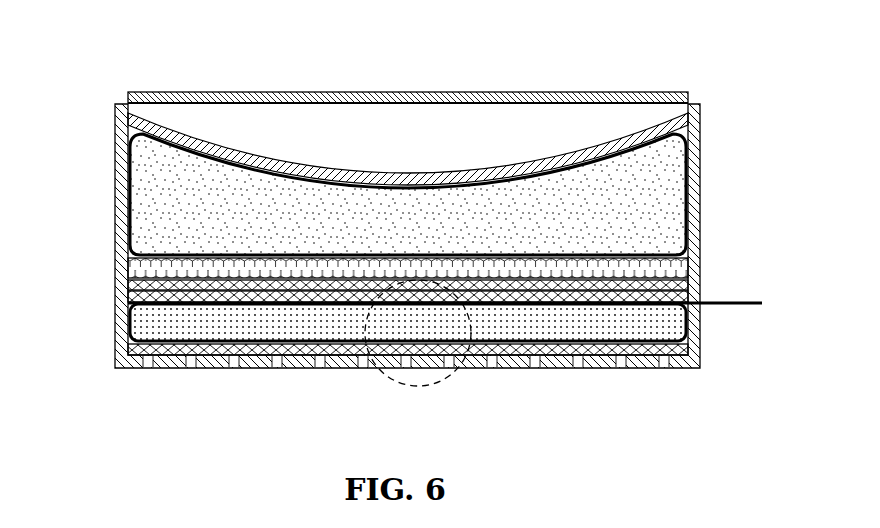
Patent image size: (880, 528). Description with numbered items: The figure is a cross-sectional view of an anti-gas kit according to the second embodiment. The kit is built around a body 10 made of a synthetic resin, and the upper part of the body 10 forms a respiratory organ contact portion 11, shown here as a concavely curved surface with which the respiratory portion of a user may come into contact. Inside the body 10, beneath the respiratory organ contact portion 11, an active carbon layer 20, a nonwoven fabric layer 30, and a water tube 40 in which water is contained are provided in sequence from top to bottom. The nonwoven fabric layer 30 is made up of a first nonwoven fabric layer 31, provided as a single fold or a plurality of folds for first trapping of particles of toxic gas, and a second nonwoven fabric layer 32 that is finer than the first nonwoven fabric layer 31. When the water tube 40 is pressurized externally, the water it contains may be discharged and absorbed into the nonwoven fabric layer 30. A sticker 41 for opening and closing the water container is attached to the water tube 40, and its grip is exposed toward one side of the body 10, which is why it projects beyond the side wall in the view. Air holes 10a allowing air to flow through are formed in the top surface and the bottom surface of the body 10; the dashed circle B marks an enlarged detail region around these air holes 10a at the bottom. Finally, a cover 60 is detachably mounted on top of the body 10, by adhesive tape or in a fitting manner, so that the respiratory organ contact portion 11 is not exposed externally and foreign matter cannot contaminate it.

The body 10 is at (708, 177).
The air holes 10a is at (408, 364).
The respiratory organ contact portion 11 is at (403, 142).
The active carbon layer 20 is at (166, 193).
The nonwoven fabric layer 30 is at (344, 298).
The first nonwoven fabric layer 31 is at (140, 350).
The second nonwoven fabric layer 32 is at (140, 268).
The water tube 40 is at (632, 330).
The sticker 41 is at (740, 303).
The cover 60 is at (592, 92).
The detail region B is at (450, 393).